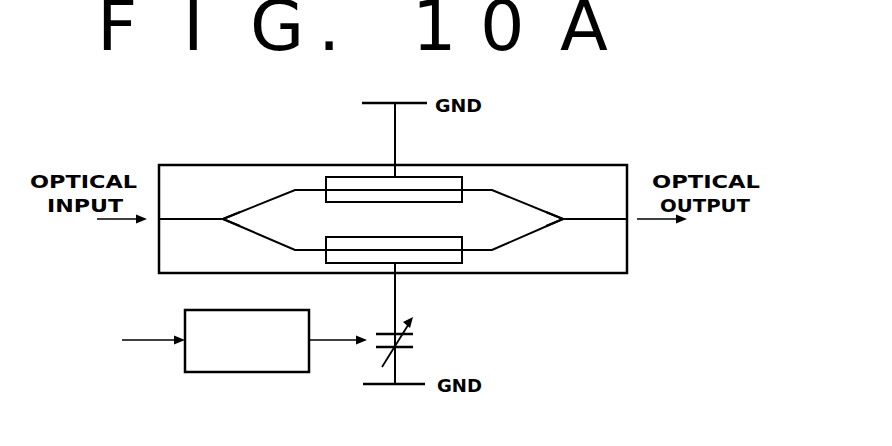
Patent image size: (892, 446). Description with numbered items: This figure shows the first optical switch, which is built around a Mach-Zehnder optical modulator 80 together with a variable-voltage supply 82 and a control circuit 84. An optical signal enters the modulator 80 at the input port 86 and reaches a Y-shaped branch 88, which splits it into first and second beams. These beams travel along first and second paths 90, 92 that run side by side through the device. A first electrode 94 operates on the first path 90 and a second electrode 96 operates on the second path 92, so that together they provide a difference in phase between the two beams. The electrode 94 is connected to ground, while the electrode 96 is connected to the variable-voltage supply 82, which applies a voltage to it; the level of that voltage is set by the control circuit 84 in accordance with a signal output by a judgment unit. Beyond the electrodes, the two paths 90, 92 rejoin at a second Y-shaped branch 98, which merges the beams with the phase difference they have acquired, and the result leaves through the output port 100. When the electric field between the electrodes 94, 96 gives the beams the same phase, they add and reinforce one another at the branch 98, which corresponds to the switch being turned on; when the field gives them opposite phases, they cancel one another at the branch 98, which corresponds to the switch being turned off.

The Mach-Zehnder optical modulator 80 is at (575, 158).
The variable-voltage supply 82 is at (415, 342).
The control circuit 84 is at (243, 372).
The input port 86 is at (157, 220).
The Y-shaped branch 88 is at (222, 223).
The first path 90 is at (258, 205).
The second path 92 is at (250, 231).
The first electrode 94 is at (462, 178).
The second electrode 96 is at (482, 223).
The Y-shaped branch 98 is at (563, 217).
The output port 100 is at (630, 222).